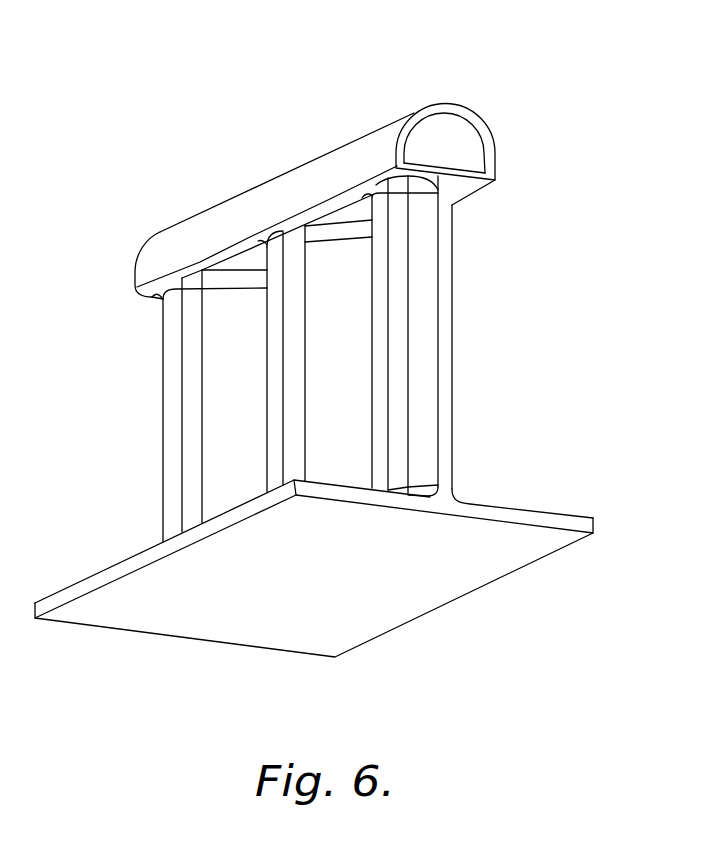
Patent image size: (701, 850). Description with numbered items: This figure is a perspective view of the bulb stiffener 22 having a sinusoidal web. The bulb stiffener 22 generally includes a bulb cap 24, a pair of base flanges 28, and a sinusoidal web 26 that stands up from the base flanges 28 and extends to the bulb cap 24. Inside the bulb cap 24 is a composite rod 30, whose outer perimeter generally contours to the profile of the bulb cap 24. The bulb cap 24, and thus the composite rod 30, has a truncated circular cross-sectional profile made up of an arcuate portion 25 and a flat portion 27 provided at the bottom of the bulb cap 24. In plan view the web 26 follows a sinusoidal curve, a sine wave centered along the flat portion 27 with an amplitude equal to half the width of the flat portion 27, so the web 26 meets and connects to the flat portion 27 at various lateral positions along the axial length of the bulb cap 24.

The bulb stiffener 22 is at (271, 64).
The bulb cap 24 is at (362, 140).
The arcuate portion 25 is at (438, 108).
The sinusoidal web 26 is at (452, 355).
The flat portion 27 is at (462, 175).
The base flanges 28 is at (530, 518).
The composite rod 30 is at (458, 137).